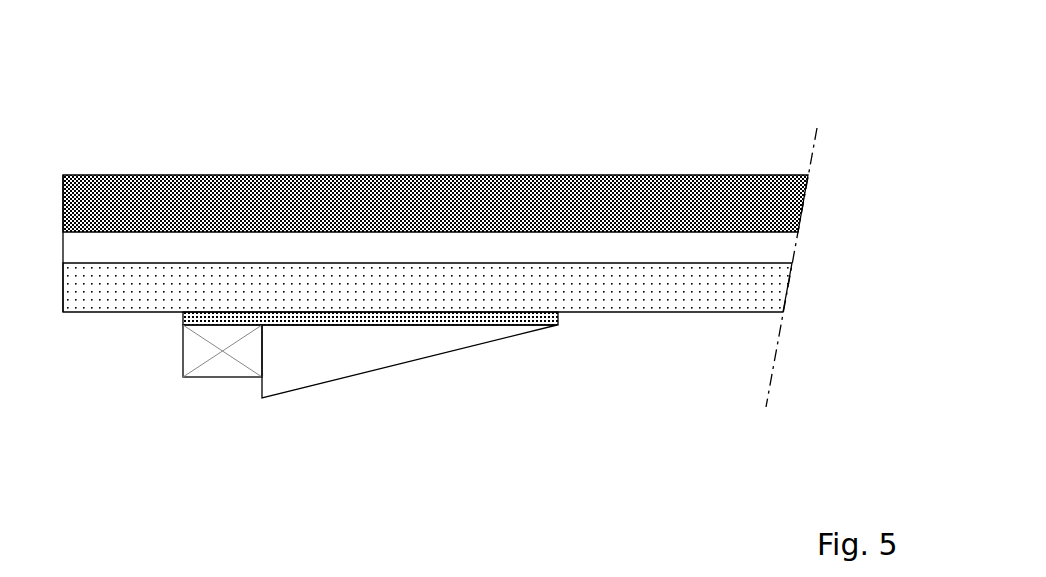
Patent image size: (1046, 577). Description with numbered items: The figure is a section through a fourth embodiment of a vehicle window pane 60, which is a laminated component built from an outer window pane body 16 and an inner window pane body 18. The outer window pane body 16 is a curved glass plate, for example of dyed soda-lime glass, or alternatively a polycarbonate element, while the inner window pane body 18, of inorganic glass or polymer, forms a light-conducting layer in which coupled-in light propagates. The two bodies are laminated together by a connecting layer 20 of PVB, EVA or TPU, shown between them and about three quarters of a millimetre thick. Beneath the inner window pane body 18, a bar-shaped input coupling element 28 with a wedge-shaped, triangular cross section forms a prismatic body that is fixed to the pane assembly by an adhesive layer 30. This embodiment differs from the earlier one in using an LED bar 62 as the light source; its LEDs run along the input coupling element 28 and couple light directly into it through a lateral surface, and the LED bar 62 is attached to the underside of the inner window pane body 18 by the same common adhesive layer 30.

The outer window pane body 16 is at (114, 203).
The inner window pane body 18 is at (110, 285).
The connecting layer 20 is at (775, 238).
The input coupling element 28 is at (348, 367).
The adhesive layer 30 is at (498, 322).
The vehicle window pane 60 is at (721, 91).
The LED bar 62 is at (227, 367).